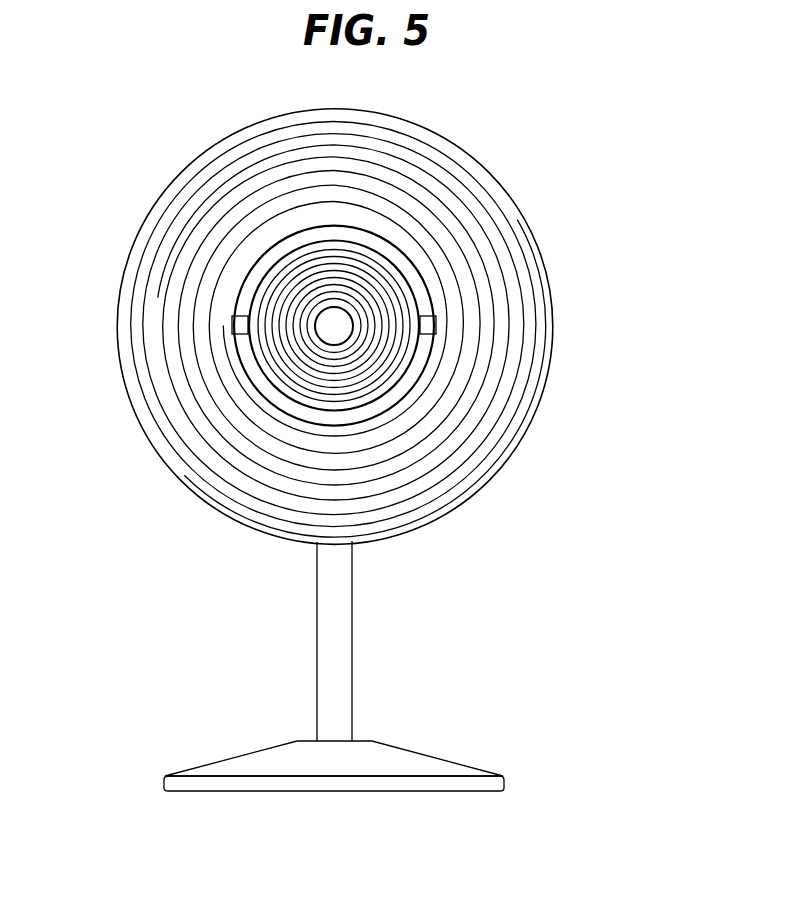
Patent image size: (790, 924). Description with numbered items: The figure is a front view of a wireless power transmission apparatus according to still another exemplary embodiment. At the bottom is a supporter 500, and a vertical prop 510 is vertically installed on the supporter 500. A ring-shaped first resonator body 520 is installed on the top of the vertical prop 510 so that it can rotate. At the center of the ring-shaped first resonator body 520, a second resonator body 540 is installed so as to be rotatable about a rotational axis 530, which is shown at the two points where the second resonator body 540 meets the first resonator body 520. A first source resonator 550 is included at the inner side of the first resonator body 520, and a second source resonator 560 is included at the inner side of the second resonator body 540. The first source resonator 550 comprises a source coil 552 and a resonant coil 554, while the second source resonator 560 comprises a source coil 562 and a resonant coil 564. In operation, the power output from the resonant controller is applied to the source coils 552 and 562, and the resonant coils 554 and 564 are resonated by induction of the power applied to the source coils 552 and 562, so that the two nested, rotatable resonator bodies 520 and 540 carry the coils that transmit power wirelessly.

The supporter 500 is at (275, 747).
The vertical prop 510 is at (328, 662).
The first resonator body 520 is at (232, 518).
The rotational axis 530 is at (240, 318).
The second resonator body 540 is at (335, 237).
The first source resonator 550 is at (410, 330).
The source coil 552 is at (527, 374).
The resonant coil 554 is at (480, 324).
The second source resonator 560 is at (228, 273).
The source coil 562 is at (300, 267).
The resonant coil 564 is at (293, 307).